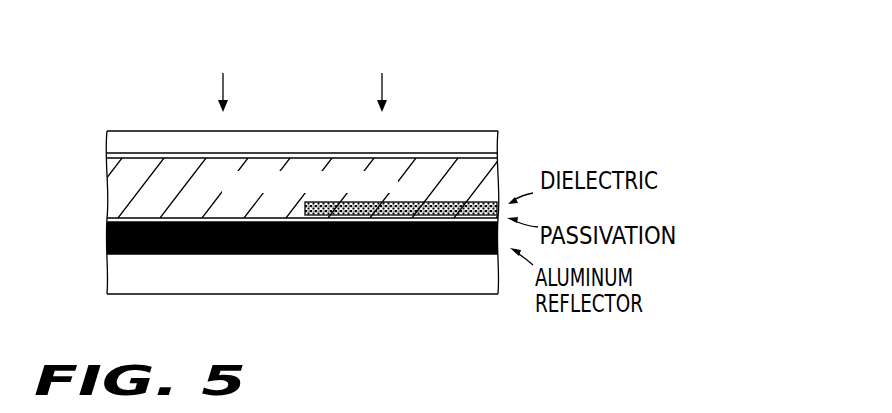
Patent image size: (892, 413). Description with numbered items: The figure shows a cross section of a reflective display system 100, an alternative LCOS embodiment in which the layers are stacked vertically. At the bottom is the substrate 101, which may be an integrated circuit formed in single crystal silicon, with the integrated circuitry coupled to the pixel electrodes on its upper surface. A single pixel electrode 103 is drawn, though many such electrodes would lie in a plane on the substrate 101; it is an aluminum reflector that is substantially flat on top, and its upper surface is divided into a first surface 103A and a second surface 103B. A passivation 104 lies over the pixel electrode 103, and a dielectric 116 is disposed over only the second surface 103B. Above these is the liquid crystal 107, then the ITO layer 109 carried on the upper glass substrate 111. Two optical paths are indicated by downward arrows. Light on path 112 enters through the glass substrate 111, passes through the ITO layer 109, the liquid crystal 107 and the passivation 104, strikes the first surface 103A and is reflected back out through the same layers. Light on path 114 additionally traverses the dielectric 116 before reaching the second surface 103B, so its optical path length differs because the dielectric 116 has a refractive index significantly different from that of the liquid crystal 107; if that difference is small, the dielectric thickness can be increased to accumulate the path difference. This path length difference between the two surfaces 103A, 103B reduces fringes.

The display system 100 is at (546, 79).
The substrate 101 is at (110, 284).
The pixel electrode 103 is at (108, 242).
The first surface 103A is at (173, 222).
The second surface 103B is at (433, 222).
The passivation 104 is at (108, 218).
The liquid crystal 107 is at (110, 177).
The ITO layer 109 is at (498, 157).
The glass substrate 111 is at (109, 146).
The light path 112 is at (223, 78).
The light path 114 is at (383, 77).
The dielectric 116 is at (467, 202).